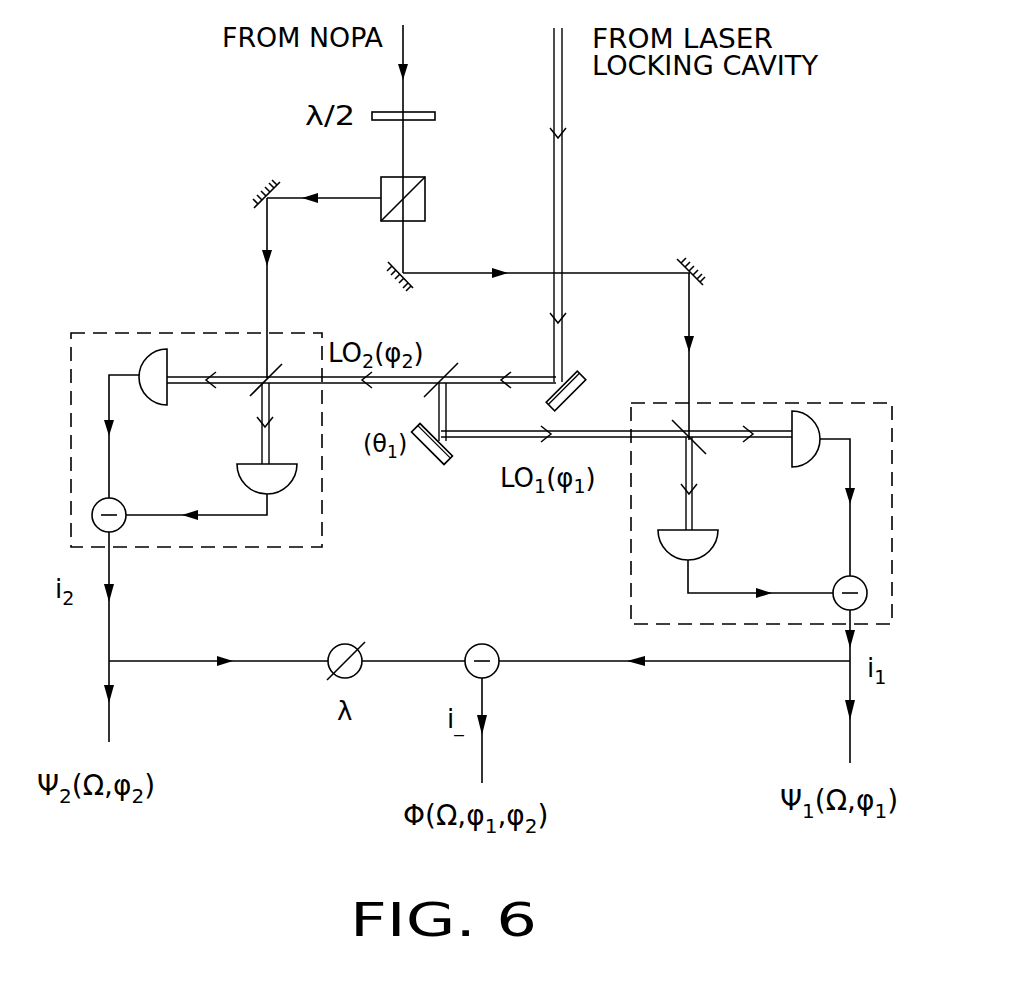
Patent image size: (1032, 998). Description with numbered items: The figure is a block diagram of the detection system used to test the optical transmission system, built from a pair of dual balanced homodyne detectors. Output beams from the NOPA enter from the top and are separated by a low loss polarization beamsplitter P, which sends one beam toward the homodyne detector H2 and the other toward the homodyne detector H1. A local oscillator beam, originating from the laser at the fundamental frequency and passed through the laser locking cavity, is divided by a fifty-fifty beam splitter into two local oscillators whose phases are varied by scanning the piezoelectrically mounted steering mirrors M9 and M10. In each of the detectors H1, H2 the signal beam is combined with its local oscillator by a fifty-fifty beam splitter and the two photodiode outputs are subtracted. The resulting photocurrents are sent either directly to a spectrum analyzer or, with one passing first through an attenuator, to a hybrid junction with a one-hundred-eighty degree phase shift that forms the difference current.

The polarization beamsplitter P is at (417, 199).
The steering mirror M9 is at (603, 375).
The steering mirror M10 is at (435, 463).
The homodyne detector H1 is at (761, 513).
The homodyne detector H2 is at (196, 440).